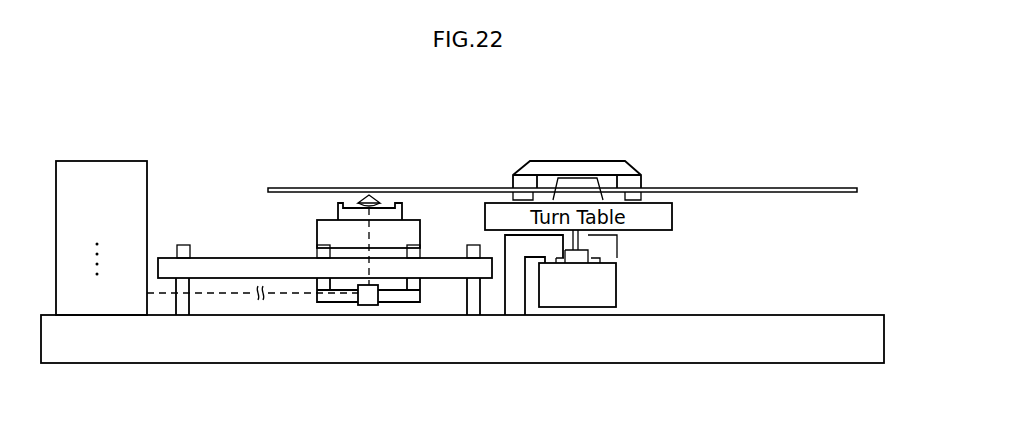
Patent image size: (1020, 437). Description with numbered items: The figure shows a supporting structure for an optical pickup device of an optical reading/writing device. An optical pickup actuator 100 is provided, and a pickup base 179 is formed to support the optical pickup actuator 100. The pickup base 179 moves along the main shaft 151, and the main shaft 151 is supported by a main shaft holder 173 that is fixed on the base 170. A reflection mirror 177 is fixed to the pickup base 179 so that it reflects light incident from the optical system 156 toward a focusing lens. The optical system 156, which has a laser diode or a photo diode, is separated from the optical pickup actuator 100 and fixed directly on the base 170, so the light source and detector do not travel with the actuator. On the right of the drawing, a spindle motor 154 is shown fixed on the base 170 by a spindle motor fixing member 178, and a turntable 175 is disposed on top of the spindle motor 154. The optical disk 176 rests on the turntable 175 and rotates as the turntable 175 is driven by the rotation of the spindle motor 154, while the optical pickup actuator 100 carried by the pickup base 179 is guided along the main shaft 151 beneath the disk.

The optical pickup actuator 100 is at (352, 206).
The main shaft 151 is at (203, 257).
The spindle motor 154 is at (602, 310).
The optical system 156 is at (110, 161).
The base 170 is at (707, 328).
The main shaft holder 173 is at (183, 307).
The turntable 175 is at (588, 162).
The optical disk 176 is at (776, 193).
The reflection mirror 177 is at (368, 305).
The spindle motor fixing member 178 is at (516, 305).
The pickup base 179 is at (398, 297).